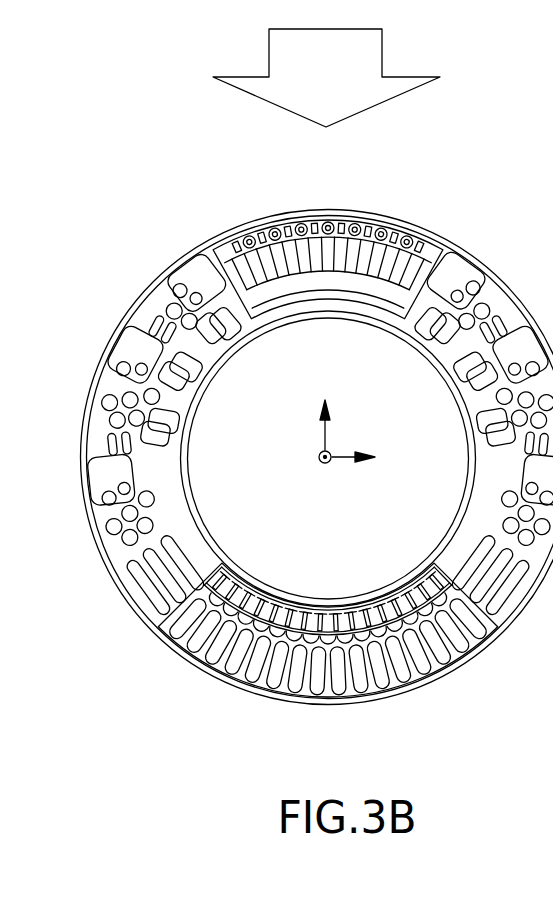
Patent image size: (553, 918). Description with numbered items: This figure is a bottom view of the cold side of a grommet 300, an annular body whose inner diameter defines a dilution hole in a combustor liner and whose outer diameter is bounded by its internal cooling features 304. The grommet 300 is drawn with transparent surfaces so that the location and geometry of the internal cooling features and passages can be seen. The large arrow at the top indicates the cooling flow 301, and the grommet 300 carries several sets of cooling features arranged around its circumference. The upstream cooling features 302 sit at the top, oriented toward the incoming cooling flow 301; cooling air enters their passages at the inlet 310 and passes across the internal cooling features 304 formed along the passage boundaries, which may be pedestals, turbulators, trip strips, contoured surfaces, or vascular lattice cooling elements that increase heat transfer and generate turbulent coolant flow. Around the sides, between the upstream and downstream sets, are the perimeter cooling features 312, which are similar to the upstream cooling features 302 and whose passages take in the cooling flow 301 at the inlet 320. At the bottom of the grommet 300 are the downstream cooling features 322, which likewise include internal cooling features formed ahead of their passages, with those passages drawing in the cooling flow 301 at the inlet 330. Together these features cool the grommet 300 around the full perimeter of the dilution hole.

The grommet 300 is at (162, 193).
The cooling flow 301 is at (398, 86).
The upstream cooling features 302 is at (414, 275).
The internal cooling features 304 is at (244, 236).
The inlet 310 is at (372, 232).
The perimeter cooling features 312 is at (160, 303).
The inlet 320 is at (456, 276).
The downstream cooling features 322 is at (467, 613).
The inlet 330 is at (372, 612).